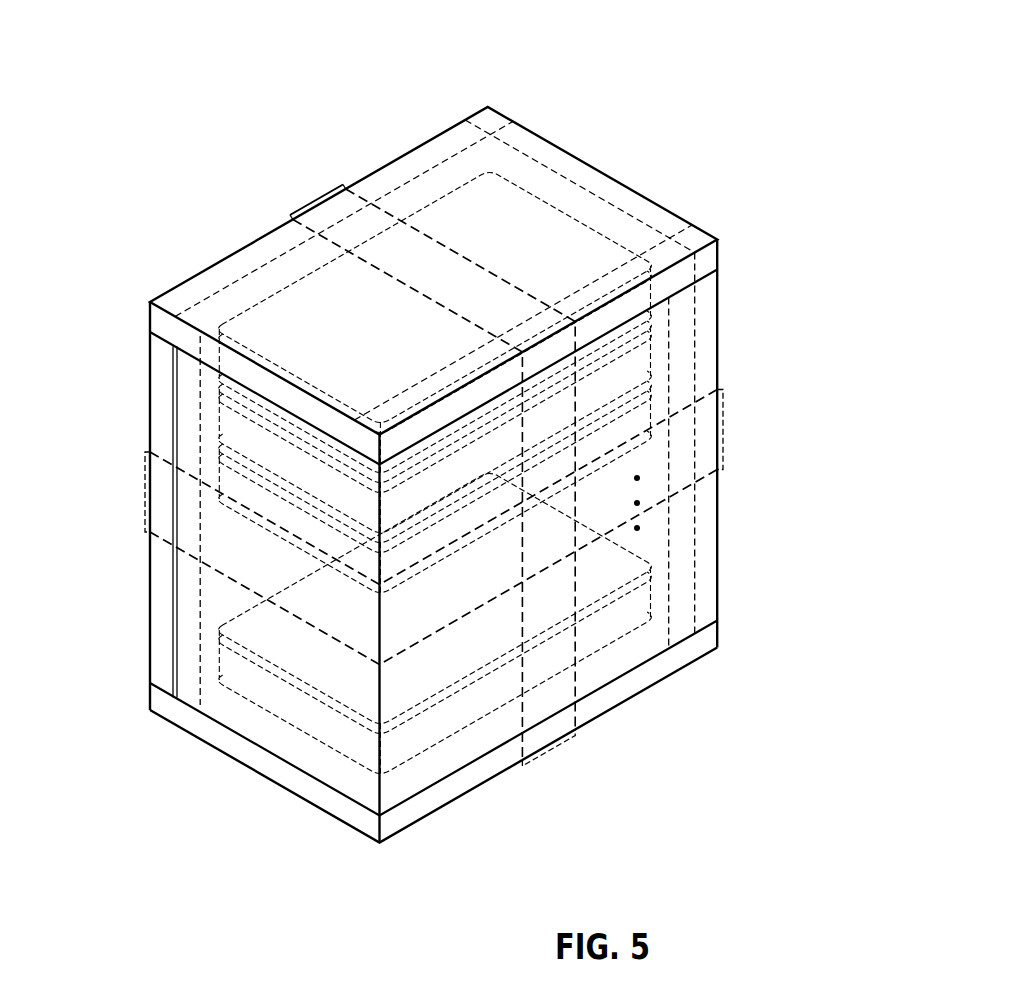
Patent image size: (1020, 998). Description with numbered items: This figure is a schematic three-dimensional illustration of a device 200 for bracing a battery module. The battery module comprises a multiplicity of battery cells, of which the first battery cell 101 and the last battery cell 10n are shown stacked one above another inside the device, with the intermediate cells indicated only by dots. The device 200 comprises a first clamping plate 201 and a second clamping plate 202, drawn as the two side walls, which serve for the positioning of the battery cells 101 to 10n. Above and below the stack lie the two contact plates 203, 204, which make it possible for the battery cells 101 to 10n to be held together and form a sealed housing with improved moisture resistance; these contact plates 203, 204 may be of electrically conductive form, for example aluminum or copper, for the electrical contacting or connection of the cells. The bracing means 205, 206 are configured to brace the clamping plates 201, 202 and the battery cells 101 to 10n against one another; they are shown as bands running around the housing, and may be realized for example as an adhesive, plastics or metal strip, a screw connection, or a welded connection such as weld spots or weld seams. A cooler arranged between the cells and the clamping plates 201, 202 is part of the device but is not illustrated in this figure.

The device for bracing a battery module 200 is at (378, 110).
The first clamping plate 201 is at (709, 529).
The second clamping plate 202 is at (160, 402).
The contact plate 203 is at (563, 167).
The contact plate 204 is at (247, 750).
The bracing means 205 is at (145, 495).
The bracing means 206 is at (318, 200).
The battery cell 101 is at (272, 300).
The battery cell 10n is at (240, 632).